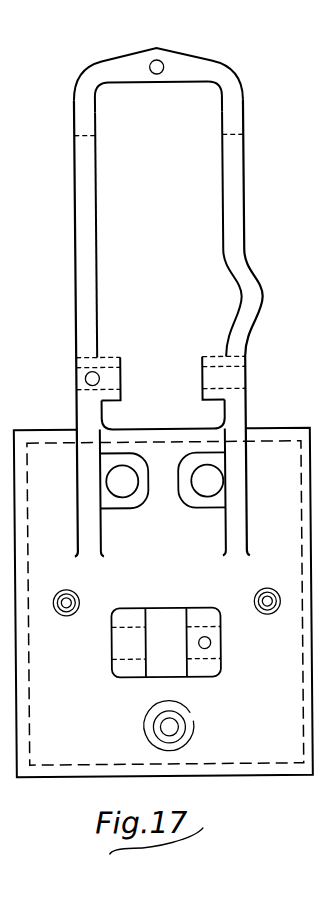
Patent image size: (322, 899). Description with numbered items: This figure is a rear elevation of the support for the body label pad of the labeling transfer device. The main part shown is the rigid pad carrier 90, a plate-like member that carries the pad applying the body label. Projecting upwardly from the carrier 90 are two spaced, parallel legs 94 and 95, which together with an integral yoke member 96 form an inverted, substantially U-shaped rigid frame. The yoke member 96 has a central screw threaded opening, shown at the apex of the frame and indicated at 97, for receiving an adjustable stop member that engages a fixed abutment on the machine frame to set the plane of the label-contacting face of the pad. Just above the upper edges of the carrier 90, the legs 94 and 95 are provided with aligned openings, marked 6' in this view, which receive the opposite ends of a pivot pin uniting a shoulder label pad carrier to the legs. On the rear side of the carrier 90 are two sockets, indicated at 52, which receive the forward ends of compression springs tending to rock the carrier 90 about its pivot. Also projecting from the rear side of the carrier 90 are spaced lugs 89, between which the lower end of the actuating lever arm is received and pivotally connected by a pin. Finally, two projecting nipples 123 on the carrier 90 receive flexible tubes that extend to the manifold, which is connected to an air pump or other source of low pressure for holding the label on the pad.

The yoke member 96 is at (120, 63).
The hole in top of frame 97 is at (163, 65).
The leg 94 is at (87, 289).
The leg 95 is at (229, 197).
The clamp blocks on side bars 6' is at (161, 366).
The holes with lugs 52 is at (205, 483).
The projecting nipples 123 is at (255, 598).
The spaced lugs 89 is at (128, 666).
The pad carrier 90 is at (100, 752).